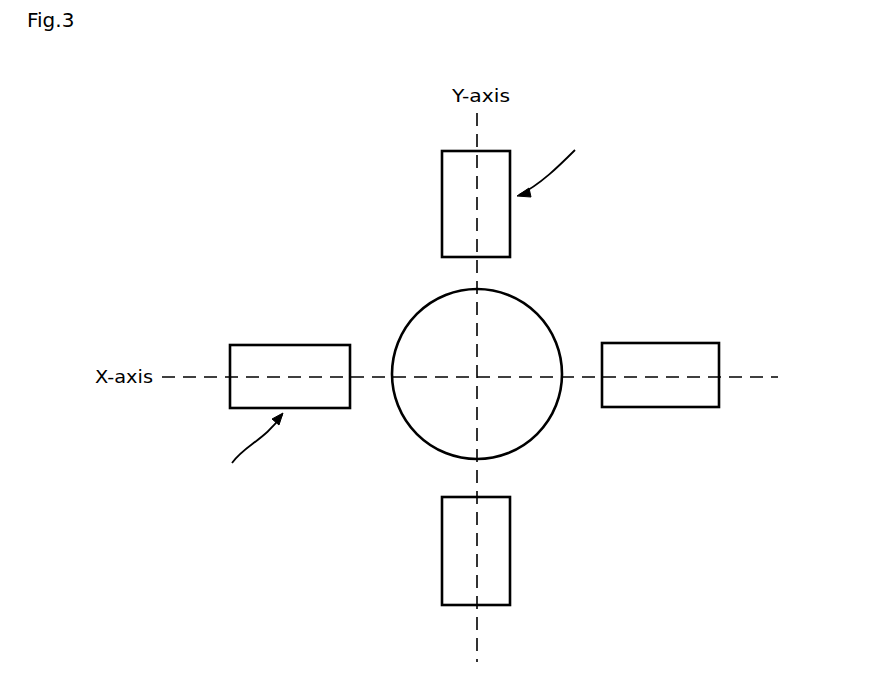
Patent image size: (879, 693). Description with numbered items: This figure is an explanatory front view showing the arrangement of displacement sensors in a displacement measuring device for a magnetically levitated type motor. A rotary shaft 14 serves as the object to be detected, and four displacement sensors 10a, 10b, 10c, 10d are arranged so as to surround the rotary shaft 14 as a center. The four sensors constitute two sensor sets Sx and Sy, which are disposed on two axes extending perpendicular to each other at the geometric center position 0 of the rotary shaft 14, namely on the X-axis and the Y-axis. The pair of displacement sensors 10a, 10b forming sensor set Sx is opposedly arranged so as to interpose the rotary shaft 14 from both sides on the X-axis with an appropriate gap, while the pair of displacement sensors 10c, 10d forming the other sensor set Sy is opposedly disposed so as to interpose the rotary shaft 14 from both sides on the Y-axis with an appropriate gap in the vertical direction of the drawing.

The displacement sensor 10a is at (293, 345).
The displacement sensor 10b is at (661, 343).
The displacement sensor 10c is at (442, 203).
The displacement sensor 10d is at (442, 563).
The rotary shaft 14 is at (538, 435).
The geometric center position 0 is at (477, 376).
The sensor set Sx is at (246, 450).
The sensor set Sy is at (555, 160).